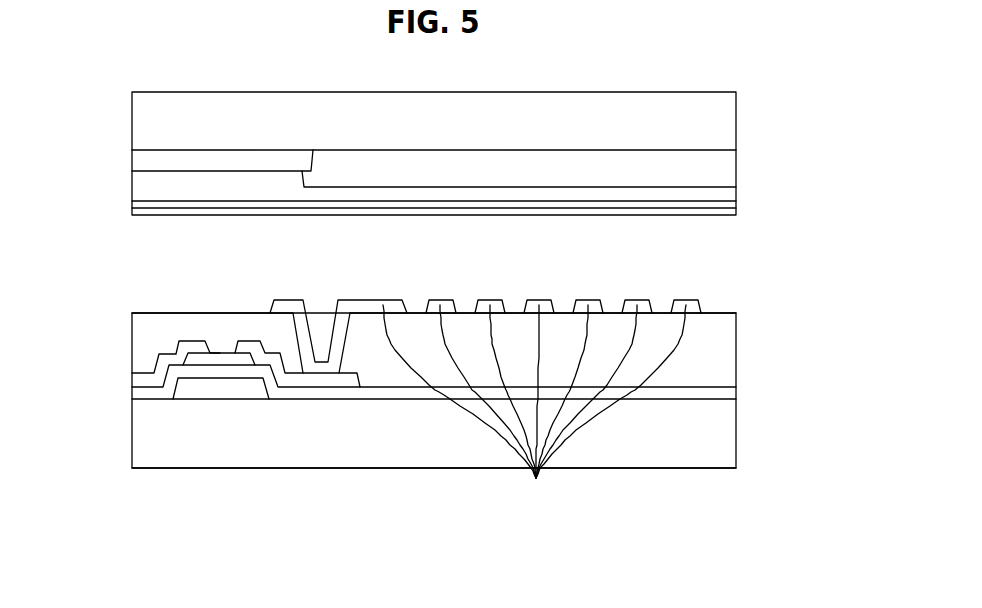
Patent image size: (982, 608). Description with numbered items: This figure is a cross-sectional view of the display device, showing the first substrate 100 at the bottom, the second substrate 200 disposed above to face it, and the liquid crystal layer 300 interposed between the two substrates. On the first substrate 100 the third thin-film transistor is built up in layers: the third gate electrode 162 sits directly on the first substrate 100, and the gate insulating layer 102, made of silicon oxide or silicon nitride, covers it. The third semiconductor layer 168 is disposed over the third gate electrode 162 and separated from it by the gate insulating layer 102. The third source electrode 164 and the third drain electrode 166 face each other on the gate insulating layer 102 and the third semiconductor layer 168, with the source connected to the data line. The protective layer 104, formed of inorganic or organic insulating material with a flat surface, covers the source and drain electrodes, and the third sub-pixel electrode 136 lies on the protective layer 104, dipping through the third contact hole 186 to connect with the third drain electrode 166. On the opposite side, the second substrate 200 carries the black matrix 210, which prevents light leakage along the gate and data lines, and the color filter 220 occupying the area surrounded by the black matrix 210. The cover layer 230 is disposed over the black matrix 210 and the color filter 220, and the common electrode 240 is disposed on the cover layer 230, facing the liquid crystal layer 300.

The first substrate 100 is at (717, 437).
The gate insulating layer 102 is at (717, 394).
The protective layer 104 is at (717, 355).
The third sub-pixel electrode 136 is at (536, 470).
The third gate electrode 162 is at (217, 390).
The third source electrode 164 is at (162, 368).
The third drain electrode 166 is at (297, 379).
The third semiconductor layer 168 is at (221, 357).
The third contact hole 186 is at (326, 289).
The second substrate 200 is at (717, 125).
The black matrix 210 is at (146, 162).
The color filter 220 is at (717, 171).
The cover layer 230 is at (146, 190).
The common electrode 240 is at (148, 207).
The liquid crystal layer 300 is at (717, 264).